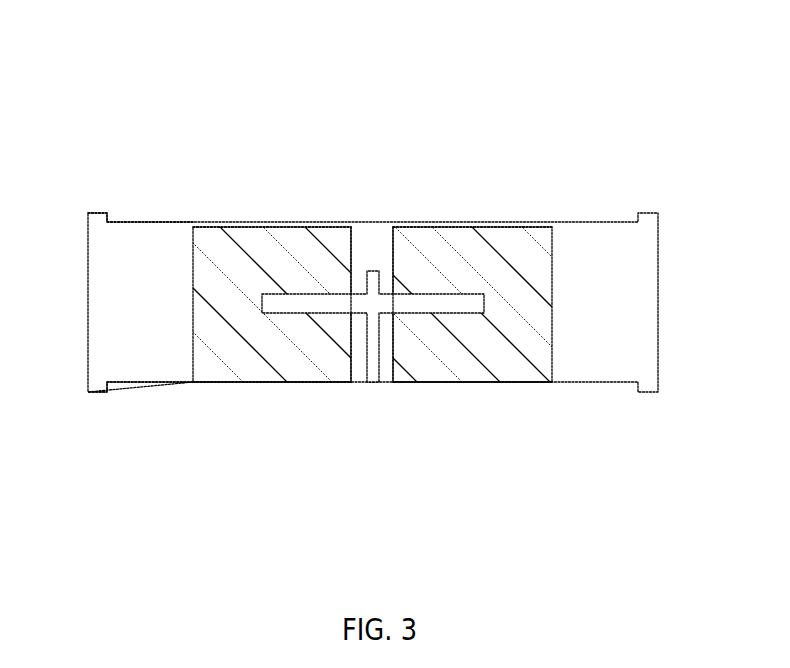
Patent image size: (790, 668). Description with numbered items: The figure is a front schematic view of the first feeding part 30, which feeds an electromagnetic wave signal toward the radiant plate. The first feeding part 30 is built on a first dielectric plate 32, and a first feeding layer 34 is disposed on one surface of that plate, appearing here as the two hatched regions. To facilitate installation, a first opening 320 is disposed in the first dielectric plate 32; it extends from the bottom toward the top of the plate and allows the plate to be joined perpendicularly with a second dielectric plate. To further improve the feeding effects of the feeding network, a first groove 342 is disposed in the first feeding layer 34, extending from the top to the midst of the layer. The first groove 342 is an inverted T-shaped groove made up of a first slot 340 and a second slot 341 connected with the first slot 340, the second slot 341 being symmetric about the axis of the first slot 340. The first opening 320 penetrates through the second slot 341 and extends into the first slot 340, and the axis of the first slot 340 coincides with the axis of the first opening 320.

The first feeding part 30 is at (373, 56).
The first dielectric plate 32 is at (129, 350).
The first feeding layer 34 is at (302, 350).
The first opening 320 is at (372, 355).
The first slot 340 is at (367, 240).
The second slot 341 is at (430, 298).
The first groove 342 is at (552, 100).